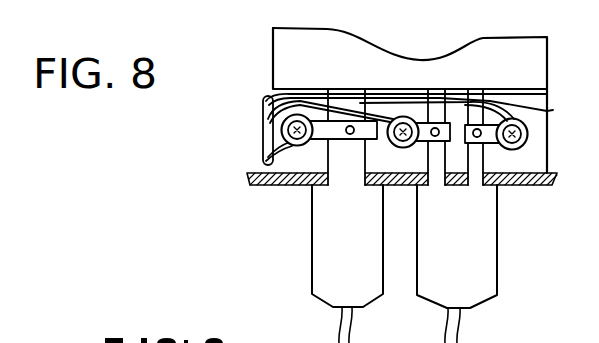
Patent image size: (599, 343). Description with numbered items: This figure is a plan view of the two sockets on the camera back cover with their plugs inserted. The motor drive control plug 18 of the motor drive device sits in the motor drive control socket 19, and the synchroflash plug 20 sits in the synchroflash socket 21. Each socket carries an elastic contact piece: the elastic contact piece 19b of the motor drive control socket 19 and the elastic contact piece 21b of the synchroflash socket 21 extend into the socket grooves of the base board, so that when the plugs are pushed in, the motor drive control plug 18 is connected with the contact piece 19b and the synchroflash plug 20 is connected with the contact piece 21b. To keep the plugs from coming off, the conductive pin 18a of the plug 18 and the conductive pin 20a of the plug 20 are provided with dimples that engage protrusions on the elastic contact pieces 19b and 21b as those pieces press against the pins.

The motor drive control plug 18 is at (495, 277).
The conductive pin 18a is at (429, 162).
The motor drive control socket 19 is at (478, 165).
The elastic contact piece 19b is at (434, 128).
The synchroflash plug 20 is at (325, 273).
The conductive pin 20a is at (316, 177).
The synchroflash socket 21 is at (306, 157).
The elastic contact piece 21b is at (351, 127).